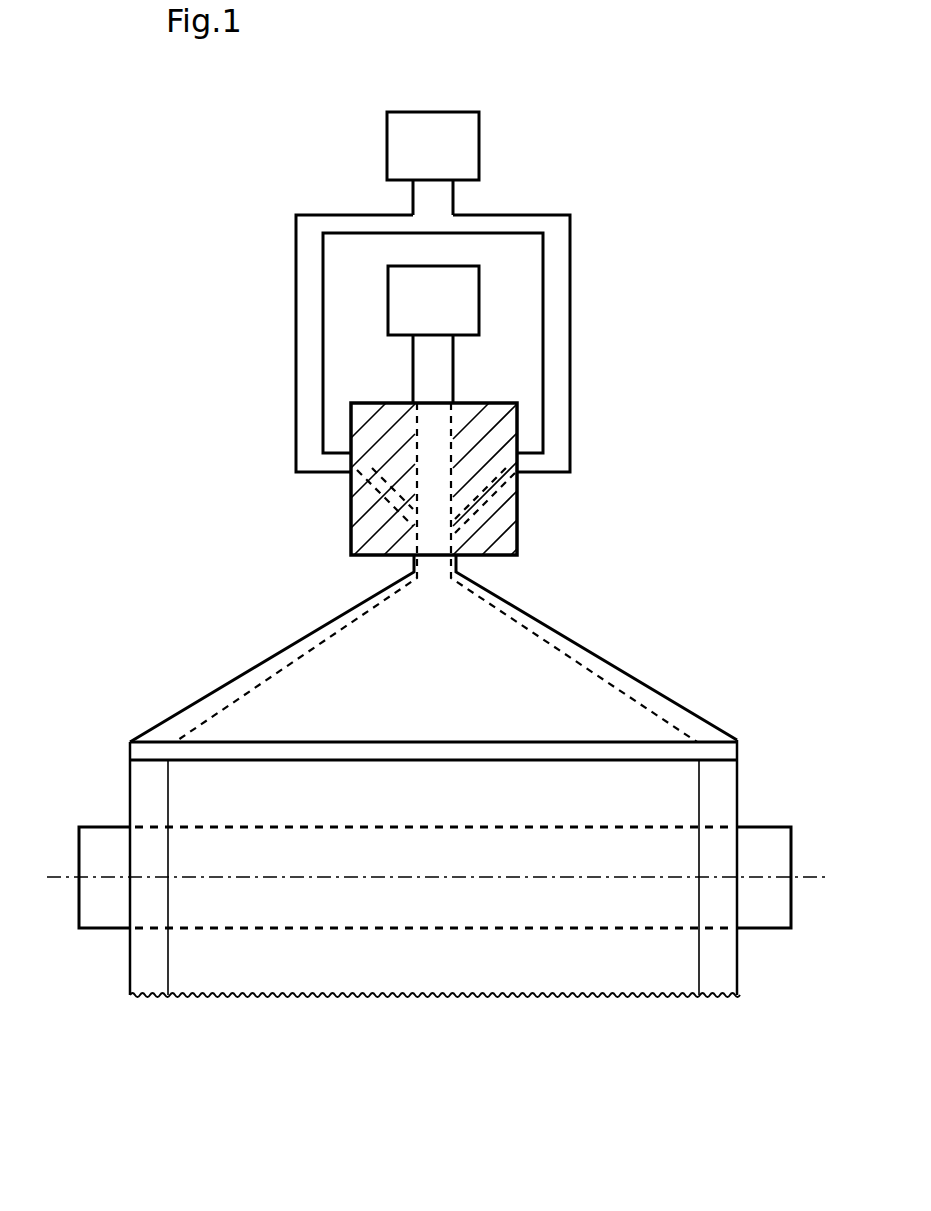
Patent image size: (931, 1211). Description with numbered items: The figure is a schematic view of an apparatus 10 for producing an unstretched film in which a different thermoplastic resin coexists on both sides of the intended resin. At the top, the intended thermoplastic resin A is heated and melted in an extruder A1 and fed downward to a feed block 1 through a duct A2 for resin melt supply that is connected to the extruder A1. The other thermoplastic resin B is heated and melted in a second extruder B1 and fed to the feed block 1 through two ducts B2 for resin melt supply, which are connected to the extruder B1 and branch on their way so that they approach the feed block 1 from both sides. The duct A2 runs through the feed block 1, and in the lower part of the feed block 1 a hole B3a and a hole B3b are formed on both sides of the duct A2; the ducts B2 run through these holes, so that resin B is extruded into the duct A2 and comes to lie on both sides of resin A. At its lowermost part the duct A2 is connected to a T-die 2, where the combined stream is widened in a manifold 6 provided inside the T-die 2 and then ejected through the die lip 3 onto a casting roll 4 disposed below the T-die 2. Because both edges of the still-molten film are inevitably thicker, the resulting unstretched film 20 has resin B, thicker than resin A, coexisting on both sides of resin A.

The apparatus for producing unstretched film 10 is at (451, 567).
The extruder B1 is at (479, 146).
The duct for resin melt supply B2 is at (296, 375).
The extruder A1 is at (479, 320).
The duct for resin melt supply A2 is at (413, 375).
The feed block 1 is at (518, 500).
The hole B3a is at (415, 527).
The hole B3b is at (453, 527).
The T-die 2 is at (677, 703).
The manifold 6 is at (552, 667).
The die lip 3 is at (737, 742).
The unstretched film 20 is at (737, 980).
The thermoplastic resin B is at (148, 800).
The thermoplastic resin A is at (650, 792).
The casting (chill) roll 4 is at (791, 910).